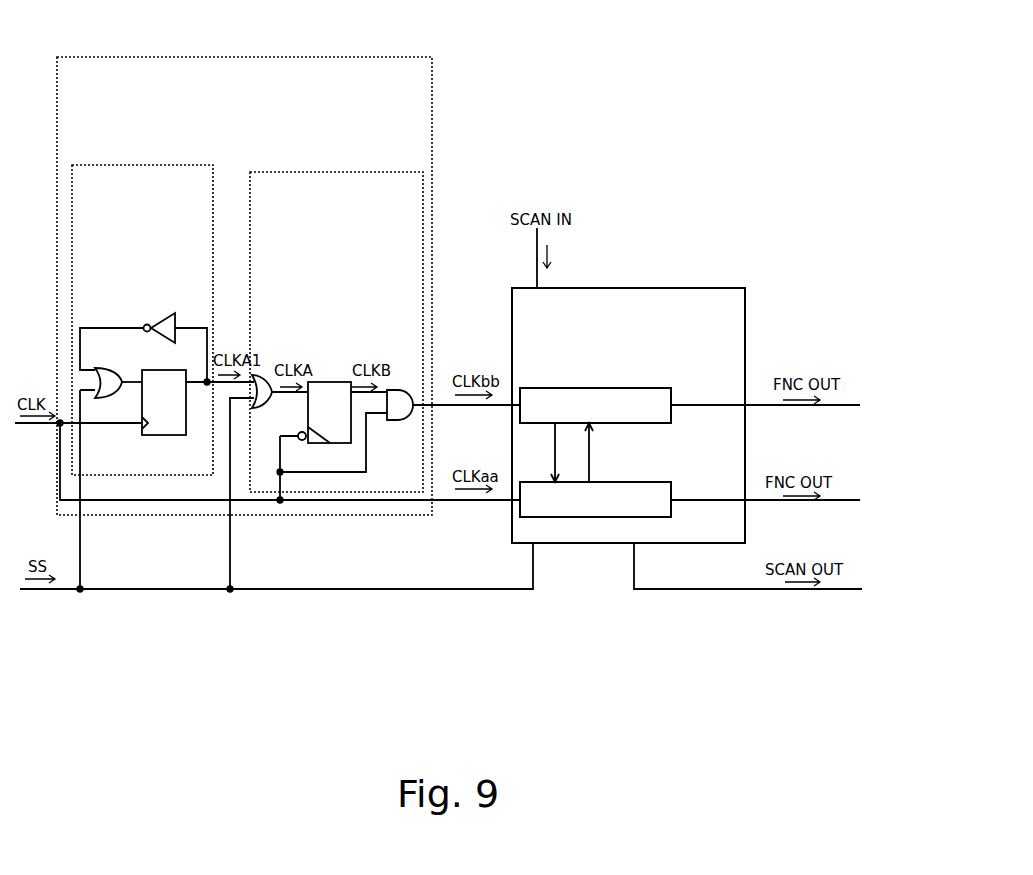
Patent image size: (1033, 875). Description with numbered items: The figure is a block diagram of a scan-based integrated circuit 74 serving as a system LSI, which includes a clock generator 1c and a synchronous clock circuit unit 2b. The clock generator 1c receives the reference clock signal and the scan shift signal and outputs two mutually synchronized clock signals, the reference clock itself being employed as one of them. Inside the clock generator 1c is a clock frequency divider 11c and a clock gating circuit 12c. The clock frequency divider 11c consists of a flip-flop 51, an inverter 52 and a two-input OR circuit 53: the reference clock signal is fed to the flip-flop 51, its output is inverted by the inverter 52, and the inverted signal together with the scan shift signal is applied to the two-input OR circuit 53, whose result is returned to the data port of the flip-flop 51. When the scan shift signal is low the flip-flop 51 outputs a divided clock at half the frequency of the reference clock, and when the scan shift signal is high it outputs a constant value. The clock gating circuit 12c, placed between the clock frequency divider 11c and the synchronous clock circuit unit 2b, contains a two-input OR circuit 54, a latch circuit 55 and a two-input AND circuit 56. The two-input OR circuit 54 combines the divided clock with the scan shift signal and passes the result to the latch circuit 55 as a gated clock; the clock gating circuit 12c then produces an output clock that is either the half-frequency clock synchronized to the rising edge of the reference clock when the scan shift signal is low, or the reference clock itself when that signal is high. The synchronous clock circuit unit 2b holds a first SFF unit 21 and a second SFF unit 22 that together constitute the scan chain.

The clock generator 1c is at (433, 93).
The clock frequency divider 11c is at (72, 234).
The clock gating circuit 12c is at (424, 218).
The synchronous clock circuit unit 2b is at (712, 289).
The first SFF unit 21 is at (626, 482).
The second SFF unit 22 is at (631, 388).
The flip-flop 51 is at (170, 437).
The inverter 52 is at (177, 315).
The two-input OR circuit 53 is at (103, 371).
The two-input OR circuit 54 is at (256, 372).
The latch circuit 55 is at (340, 382).
The two-input AND circuit 56 is at (398, 422).
The integrated circuit 74 is at (783, 200).